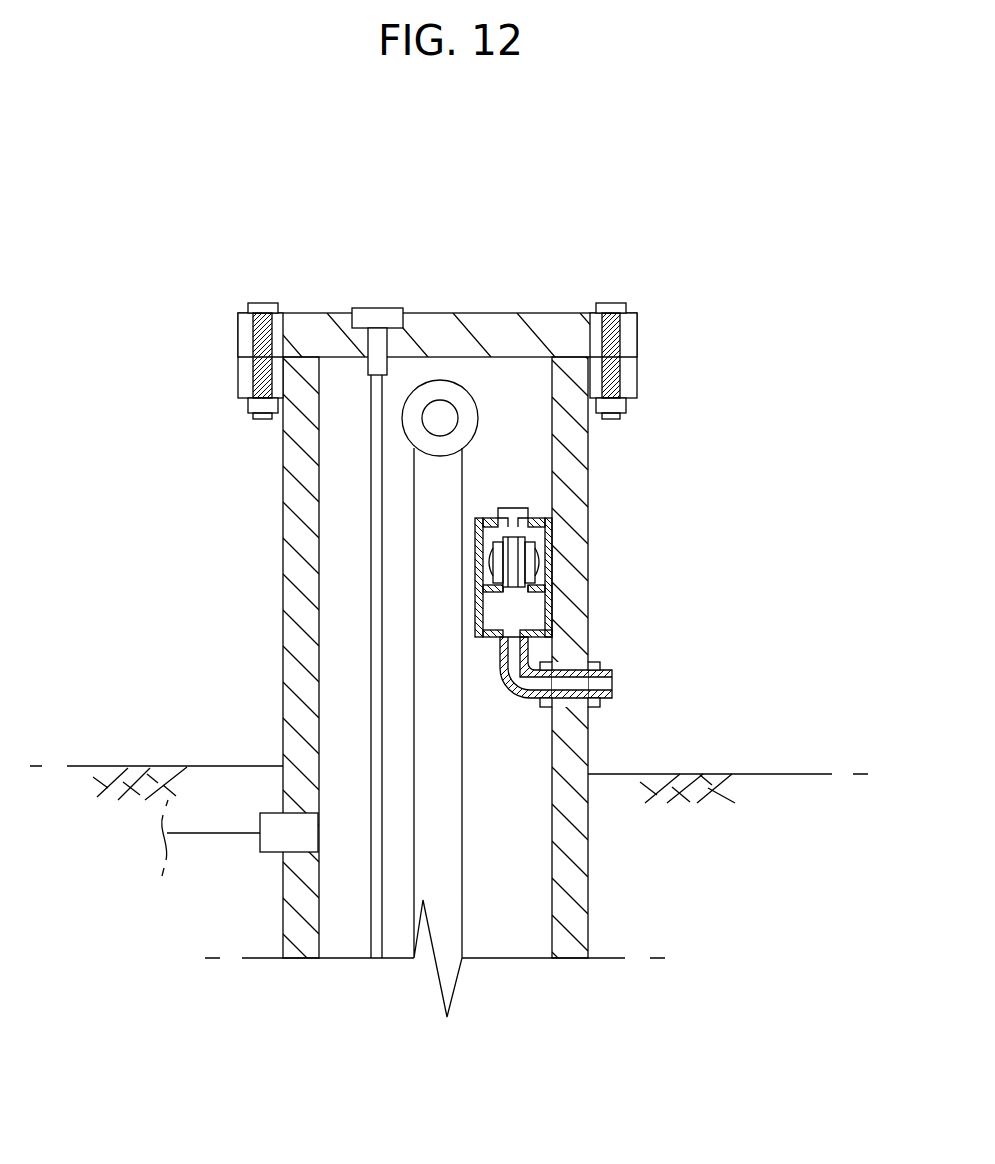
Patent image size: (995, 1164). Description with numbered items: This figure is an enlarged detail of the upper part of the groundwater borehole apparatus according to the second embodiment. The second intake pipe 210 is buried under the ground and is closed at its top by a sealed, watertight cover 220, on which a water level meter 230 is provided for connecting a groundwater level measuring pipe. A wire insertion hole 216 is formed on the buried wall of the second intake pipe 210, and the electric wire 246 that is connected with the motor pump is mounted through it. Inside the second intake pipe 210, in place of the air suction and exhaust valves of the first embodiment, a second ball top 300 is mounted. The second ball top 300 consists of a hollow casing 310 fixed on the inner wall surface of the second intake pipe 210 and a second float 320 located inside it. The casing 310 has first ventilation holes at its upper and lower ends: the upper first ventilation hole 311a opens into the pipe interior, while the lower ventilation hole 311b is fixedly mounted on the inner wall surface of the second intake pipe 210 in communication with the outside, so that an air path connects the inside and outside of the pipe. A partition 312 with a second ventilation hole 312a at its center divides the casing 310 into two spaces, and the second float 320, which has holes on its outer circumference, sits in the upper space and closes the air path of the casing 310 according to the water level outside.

The second intake pipe 210 is at (303, 530).
The wire insertion hole 216 is at (268, 823).
The watertight cover 220 is at (545, 327).
The water level meter 230 is at (381, 318).
The electric wire 246 is at (202, 833).
The second ball top 300 is at (656, 556).
The casing 310 is at (552, 557).
The first ventilation hole 311a is at (512, 510).
The lower ventilation hole 311b is at (510, 653).
The partition 312 is at (540, 607).
The second ventilation hole 312a is at (514, 591).
The second float 320 is at (532, 547).